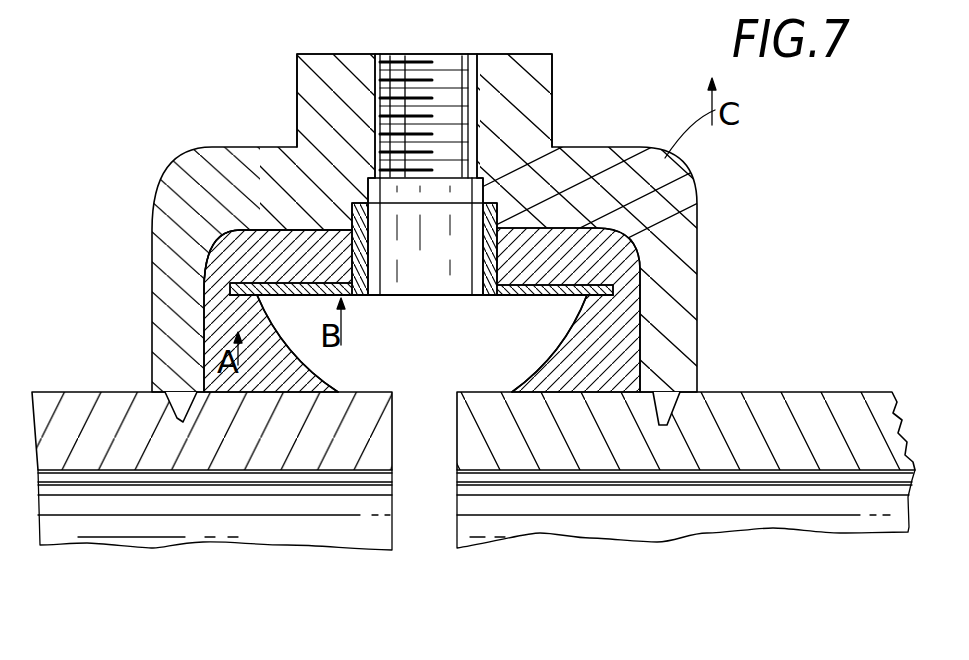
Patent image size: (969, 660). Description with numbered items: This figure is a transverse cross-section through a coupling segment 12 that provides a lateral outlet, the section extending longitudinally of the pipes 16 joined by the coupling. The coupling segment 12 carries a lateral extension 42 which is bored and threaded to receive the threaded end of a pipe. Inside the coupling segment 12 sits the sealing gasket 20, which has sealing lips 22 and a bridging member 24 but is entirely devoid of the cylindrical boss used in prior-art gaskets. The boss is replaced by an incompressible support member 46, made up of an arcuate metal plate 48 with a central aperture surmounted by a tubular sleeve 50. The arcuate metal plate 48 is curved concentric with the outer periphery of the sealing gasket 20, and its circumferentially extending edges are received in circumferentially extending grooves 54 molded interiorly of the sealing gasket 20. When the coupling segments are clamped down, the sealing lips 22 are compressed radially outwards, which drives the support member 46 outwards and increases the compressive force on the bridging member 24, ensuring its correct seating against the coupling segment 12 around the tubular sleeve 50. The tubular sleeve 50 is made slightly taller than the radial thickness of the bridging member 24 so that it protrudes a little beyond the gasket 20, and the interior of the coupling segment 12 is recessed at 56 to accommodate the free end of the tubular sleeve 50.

The coupling segment 12 is at (660, 222).
The pipes 16 is at (97, 412).
The sealing gasket 20 is at (625, 345).
The sealing lips 22 is at (303, 400).
The bridging member 24 is at (262, 232).
The lateral extension 42 is at (535, 125).
The incompressible support member 46 is at (490, 300).
The arcuate metal plate 48 is at (530, 297).
The tubular sleeve 50 is at (383, 268).
The circumferentially extending grooves 54 is at (230, 287).
The recess 56 is at (510, 216).